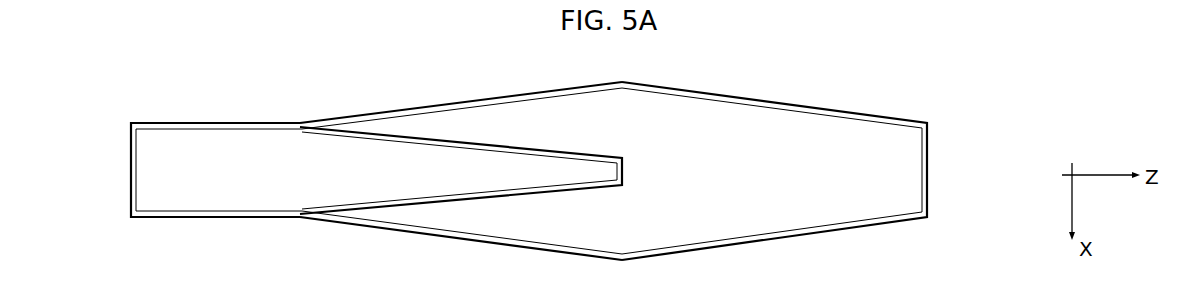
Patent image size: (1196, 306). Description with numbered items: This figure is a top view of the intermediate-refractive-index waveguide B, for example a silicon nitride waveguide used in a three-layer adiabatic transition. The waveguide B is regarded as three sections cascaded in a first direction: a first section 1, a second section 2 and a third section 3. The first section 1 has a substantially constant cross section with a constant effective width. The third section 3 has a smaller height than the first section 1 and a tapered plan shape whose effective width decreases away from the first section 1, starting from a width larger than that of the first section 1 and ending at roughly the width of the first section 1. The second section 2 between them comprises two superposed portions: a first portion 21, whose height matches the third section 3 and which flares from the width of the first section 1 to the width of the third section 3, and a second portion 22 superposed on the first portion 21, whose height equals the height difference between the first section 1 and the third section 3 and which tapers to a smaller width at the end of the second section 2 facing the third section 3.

The first section 1 is at (202, 104).
The second section 2 is at (487, 77).
The third section 3 is at (847, 92).
The first portion 21 is at (520, 232).
The second portion 22 is at (370, 192).
The waveguide B is at (246, 65).